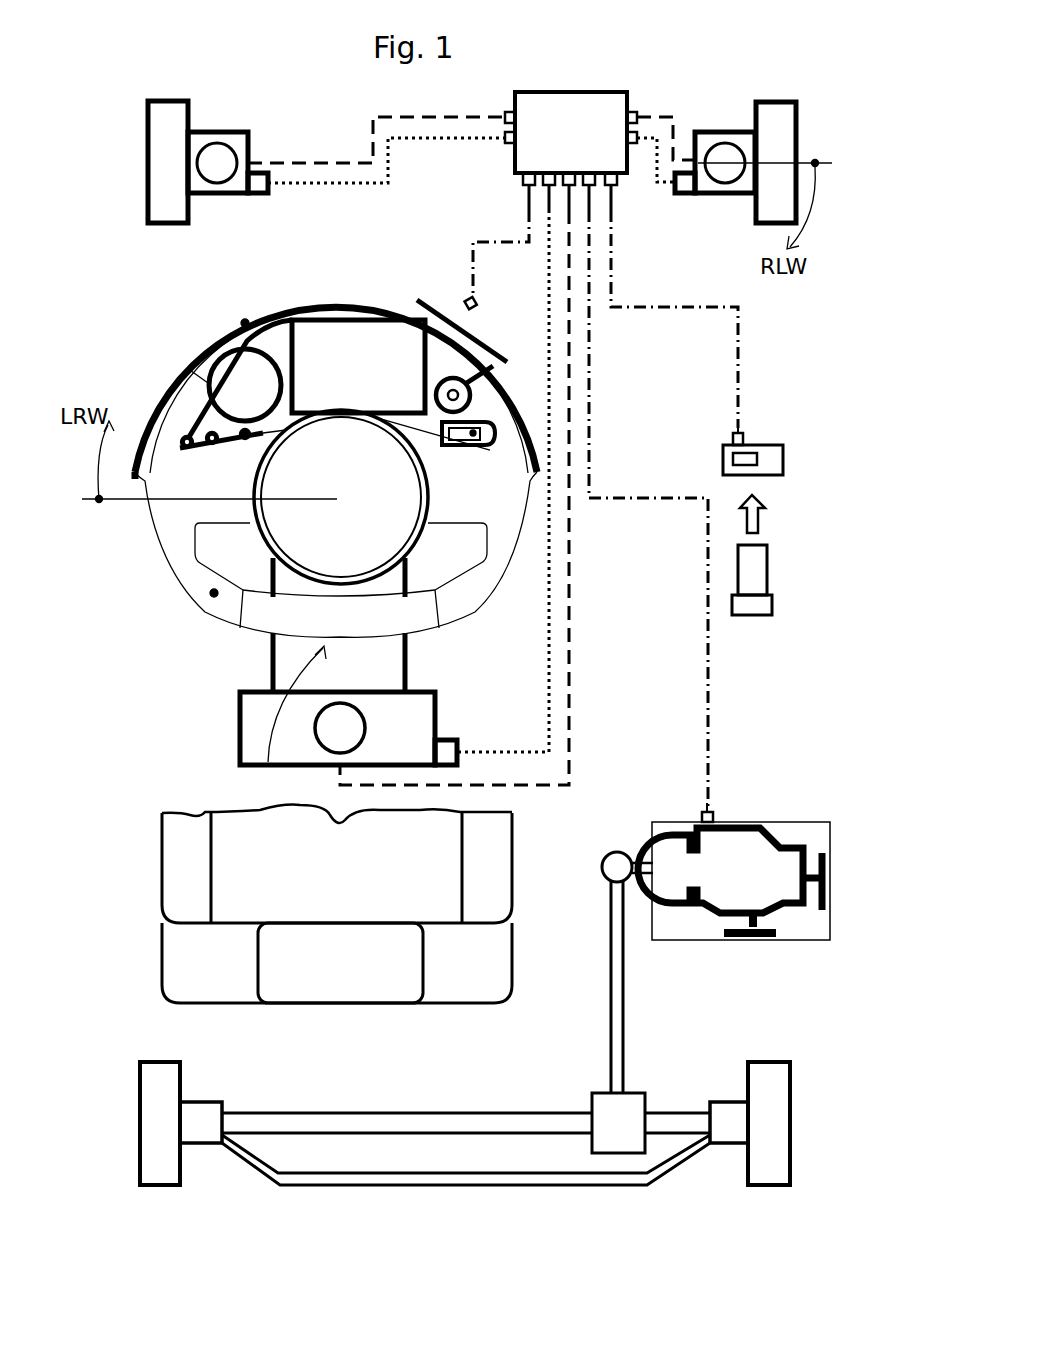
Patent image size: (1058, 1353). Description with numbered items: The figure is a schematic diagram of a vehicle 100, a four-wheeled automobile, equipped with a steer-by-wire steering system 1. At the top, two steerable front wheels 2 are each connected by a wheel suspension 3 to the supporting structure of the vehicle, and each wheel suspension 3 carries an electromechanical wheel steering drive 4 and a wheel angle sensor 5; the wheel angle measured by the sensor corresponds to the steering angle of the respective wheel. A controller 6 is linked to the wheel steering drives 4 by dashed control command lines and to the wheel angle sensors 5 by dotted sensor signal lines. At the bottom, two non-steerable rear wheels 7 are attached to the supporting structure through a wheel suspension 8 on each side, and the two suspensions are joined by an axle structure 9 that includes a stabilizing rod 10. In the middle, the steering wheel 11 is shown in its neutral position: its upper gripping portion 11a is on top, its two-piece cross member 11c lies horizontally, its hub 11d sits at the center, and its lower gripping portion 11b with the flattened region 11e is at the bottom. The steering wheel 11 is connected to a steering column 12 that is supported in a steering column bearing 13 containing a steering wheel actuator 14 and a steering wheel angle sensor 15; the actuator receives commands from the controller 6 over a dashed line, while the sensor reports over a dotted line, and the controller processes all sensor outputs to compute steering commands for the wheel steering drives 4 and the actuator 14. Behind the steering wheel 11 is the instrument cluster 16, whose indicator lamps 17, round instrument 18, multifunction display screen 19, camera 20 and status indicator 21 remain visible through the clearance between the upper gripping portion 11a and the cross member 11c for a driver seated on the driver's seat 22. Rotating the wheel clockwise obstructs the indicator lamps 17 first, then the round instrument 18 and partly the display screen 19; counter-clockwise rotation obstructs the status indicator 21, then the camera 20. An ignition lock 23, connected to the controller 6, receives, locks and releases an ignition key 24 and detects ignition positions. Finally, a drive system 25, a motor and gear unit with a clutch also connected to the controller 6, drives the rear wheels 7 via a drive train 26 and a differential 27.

The vehicle 100 is at (98, 62).
The steering system 1 is at (427, 214).
The steerable wheels 2 is at (176, 101).
The wheel suspension 3 is at (213, 132).
The electromechanical wheel steering drive 4 is at (238, 142).
The wheel angle sensor 5 is at (257, 195).
The controller 6 is at (574, 92).
The non-steerable wheels 7 is at (157, 1185).
The wheel suspension 8 is at (198, 1147).
The axle structure 9 is at (292, 1112).
The stabilizing rod 10 is at (315, 1190).
The steering wheel 11 is at (177, 588).
The upper gripping portion 11a is at (245, 321).
The lower gripping portion 11b is at (214, 595).
The two-piece cross member 11c is at (222, 474).
The hub 11d is at (341, 497).
The flattened region 11e is at (268, 763).
The steering column 12 is at (273, 657).
The steering column bearing 13 is at (240, 728).
The steering wheel actuator 14 is at (358, 706).
The steering wheel angle sensor 15 is at (445, 742).
The instrument cluster 16 is at (165, 333).
The indicator lamps 17 is at (207, 425).
The round instrument 18 is at (245, 385).
The multifunction display screen 19 is at (358, 366).
The camera 20 is at (442, 378).
The status indicator 21 is at (480, 420).
The driver's seat 22 is at (162, 863).
The ignition lock 23 is at (786, 450).
The ignition key 24 is at (770, 568).
The drive system 25 is at (740, 822).
The drive train 26 is at (625, 985).
The differential 27 is at (592, 1097).